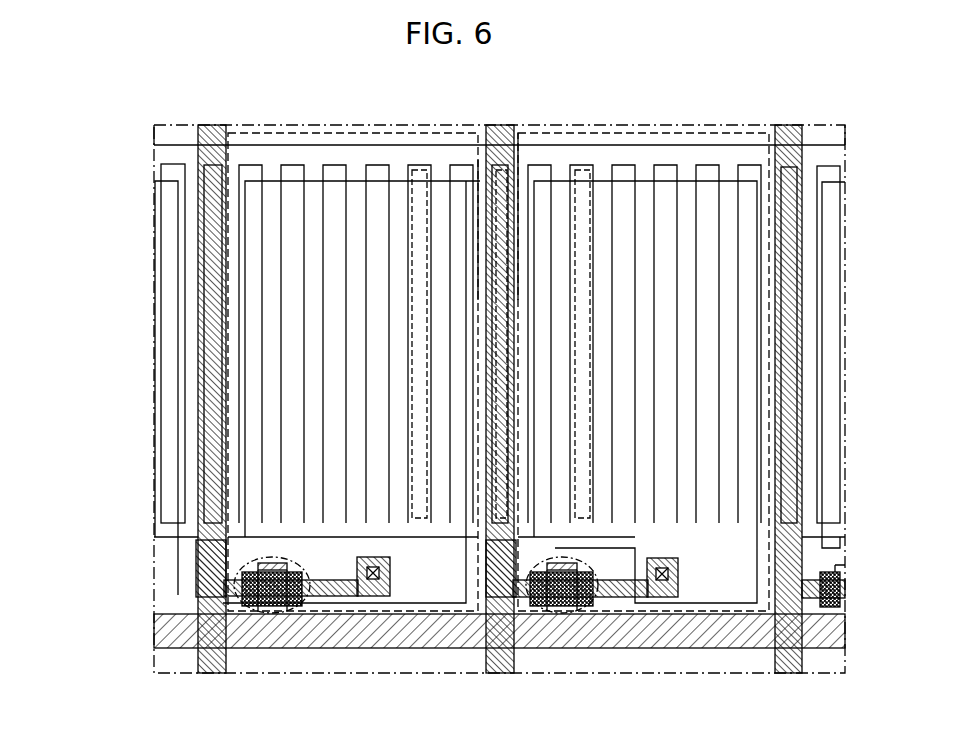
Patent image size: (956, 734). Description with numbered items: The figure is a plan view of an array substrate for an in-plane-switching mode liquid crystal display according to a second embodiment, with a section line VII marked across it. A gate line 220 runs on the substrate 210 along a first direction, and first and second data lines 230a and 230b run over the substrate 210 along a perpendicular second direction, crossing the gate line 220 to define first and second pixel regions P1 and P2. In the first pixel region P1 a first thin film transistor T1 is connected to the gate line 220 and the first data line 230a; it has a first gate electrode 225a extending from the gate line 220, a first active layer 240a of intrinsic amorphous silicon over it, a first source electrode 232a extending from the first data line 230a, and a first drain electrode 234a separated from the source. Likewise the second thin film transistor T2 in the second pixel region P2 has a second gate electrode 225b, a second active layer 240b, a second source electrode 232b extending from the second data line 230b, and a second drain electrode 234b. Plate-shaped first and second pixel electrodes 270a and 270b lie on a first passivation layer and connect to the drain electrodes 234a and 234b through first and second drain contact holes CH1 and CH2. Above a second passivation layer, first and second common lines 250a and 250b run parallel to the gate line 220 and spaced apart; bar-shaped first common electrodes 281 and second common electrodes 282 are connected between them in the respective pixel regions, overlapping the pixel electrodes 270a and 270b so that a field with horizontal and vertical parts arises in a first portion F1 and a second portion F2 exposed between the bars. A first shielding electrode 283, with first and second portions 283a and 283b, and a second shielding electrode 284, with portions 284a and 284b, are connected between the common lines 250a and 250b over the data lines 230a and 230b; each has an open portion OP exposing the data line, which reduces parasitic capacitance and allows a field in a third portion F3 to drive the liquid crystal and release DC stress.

The substrate 210 is at (499, 400).
The gate line 220 is at (376, 650).
The first data line 230a is at (193, 354).
The second data line 230b is at (497, 128).
The first pixel region P1 is at (296, 133).
The second pixel region P2 is at (632, 133).
The first shielding electrode 283 is at (120, 379).
The first portion of the first shielding electrode 283a is at (190, 268).
The second portion of the first shielding electrode 283b is at (232, 312).
The first common electrodes 281 is at (316, 380).
The second common electrodes 282 is at (606, 380).
The first pixel electrode 270a is at (340, 170).
The second pixel electrode 270b is at (667, 170).
The first portion F1 is at (420, 170).
The second portion F2 is at (583, 170).
The third portion F3 is at (502, 168).
The first common line 250a is at (523, 150).
The second common line 250b is at (430, 540).
The second shielding electrode 284 is at (559, 230).
The first portion of the second shielding electrode 284a is at (482, 228).
The second portion of the second shielding electrode 284b is at (520, 252).
The open portion OP is at (221, 250).
The first active layer 240a is at (285, 608).
The second active layer 240b is at (585, 608).
The first drain electrode 234a is at (325, 592).
The second drain electrode 234b is at (612, 592).
The first source electrode 232a is at (228, 574).
The second source electrode 232b is at (522, 574).
The first gate electrode 225a is at (272, 562).
The second gate electrode 225b is at (562, 562).
The first drain contact hole CH1 is at (380, 566).
The second drain contact hole CH2 is at (666, 566).
The first thin film transistor T1 is at (265, 608).
The second thin film transistor T2 is at (557, 608).
The section line VII is at (623, 455).